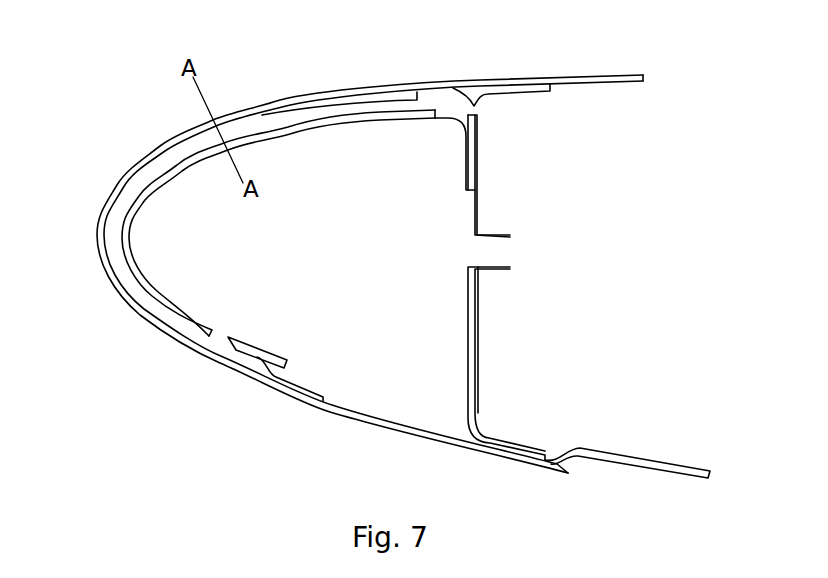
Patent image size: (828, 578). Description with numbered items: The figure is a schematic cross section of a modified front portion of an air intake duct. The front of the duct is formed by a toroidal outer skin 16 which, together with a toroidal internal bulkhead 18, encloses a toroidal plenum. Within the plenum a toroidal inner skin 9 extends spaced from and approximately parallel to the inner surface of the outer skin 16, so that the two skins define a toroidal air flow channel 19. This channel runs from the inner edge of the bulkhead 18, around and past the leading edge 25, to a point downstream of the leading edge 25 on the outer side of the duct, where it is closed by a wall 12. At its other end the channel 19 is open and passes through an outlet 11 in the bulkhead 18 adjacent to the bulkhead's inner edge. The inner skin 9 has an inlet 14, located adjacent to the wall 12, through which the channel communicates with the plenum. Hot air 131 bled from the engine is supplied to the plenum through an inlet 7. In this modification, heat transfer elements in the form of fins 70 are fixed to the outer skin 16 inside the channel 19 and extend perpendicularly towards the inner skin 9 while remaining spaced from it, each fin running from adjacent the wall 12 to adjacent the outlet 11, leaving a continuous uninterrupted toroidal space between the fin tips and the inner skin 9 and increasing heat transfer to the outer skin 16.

The inlet 7 is at (476, 272).
The inner skin 9 is at (141, 207).
The outlet 11 is at (473, 107).
The wall 12 is at (272, 380).
The inlet 14 is at (221, 333).
The outer skin 16 is at (112, 290).
The internal bulkhead 18 is at (476, 179).
The toroidal channel 19 is at (151, 180).
The leading edge 25 is at (97, 238).
The fins 70 is at (243, 123).
The hot air 131 is at (517, 252).